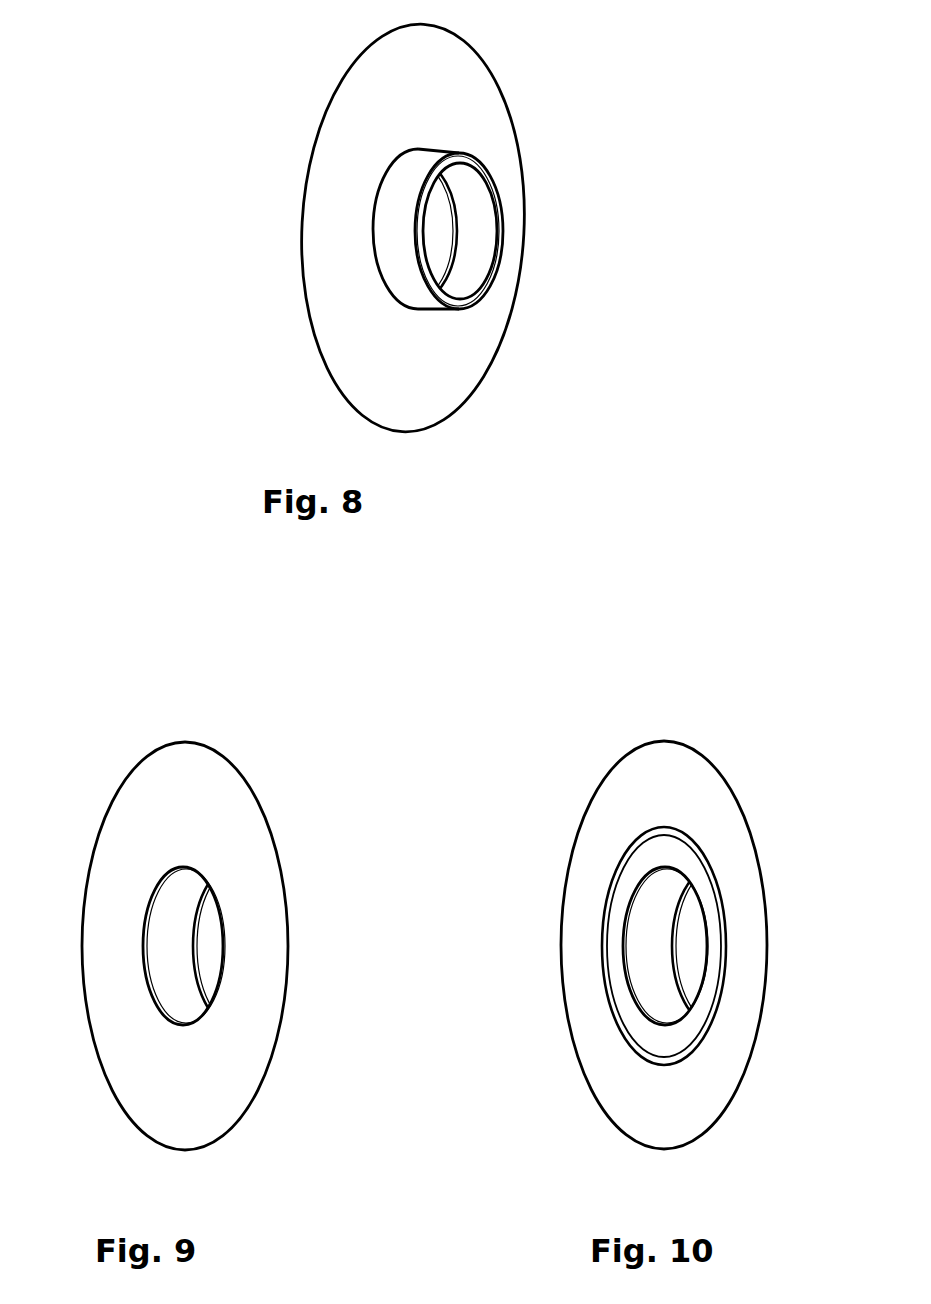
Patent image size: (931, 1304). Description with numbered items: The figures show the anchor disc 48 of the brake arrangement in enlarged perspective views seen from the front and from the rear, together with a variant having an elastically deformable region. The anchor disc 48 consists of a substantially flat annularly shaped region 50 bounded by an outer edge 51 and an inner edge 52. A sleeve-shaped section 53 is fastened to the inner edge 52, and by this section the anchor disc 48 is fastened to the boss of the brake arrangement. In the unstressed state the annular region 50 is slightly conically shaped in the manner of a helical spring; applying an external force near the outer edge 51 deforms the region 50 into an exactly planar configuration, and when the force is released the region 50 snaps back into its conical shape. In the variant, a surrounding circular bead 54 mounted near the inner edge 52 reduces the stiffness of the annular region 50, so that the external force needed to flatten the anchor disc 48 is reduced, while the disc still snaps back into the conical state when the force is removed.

In FIG. 8, the anchor disc 48 is at (408, 403).
In FIG. 9, the anchor disc 48 is at (208, 775).
In FIG. 10, the anchor disc 48 is at (670, 760).
In FIG. 8, the annularly shaped region 50 is at (452, 362).
In FIG. 9, the annularly shaped region 50 is at (232, 1085).
In FIG. 10, the annularly shaped region 50 is at (742, 1028).
In FIG. 8, the outer edge 51 is at (520, 278).
In FIG. 9, the outer edge 51 is at (287, 990).
In FIG. 10, the outer edge 51 is at (758, 858).
In FIG. 8, the inner edge 52 is at (441, 228).
In FIG. 9, the inner edge 52 is at (220, 950).
In FIG. 10, the inner edge 52 is at (691, 946).
In FIG. 8, the sleeve-shaped section 53 is at (470, 162).
In FIG. 9, the sleeve-shaped section 53 is at (163, 952).
In FIG. 10, the circular bead 54 is at (617, 1025).